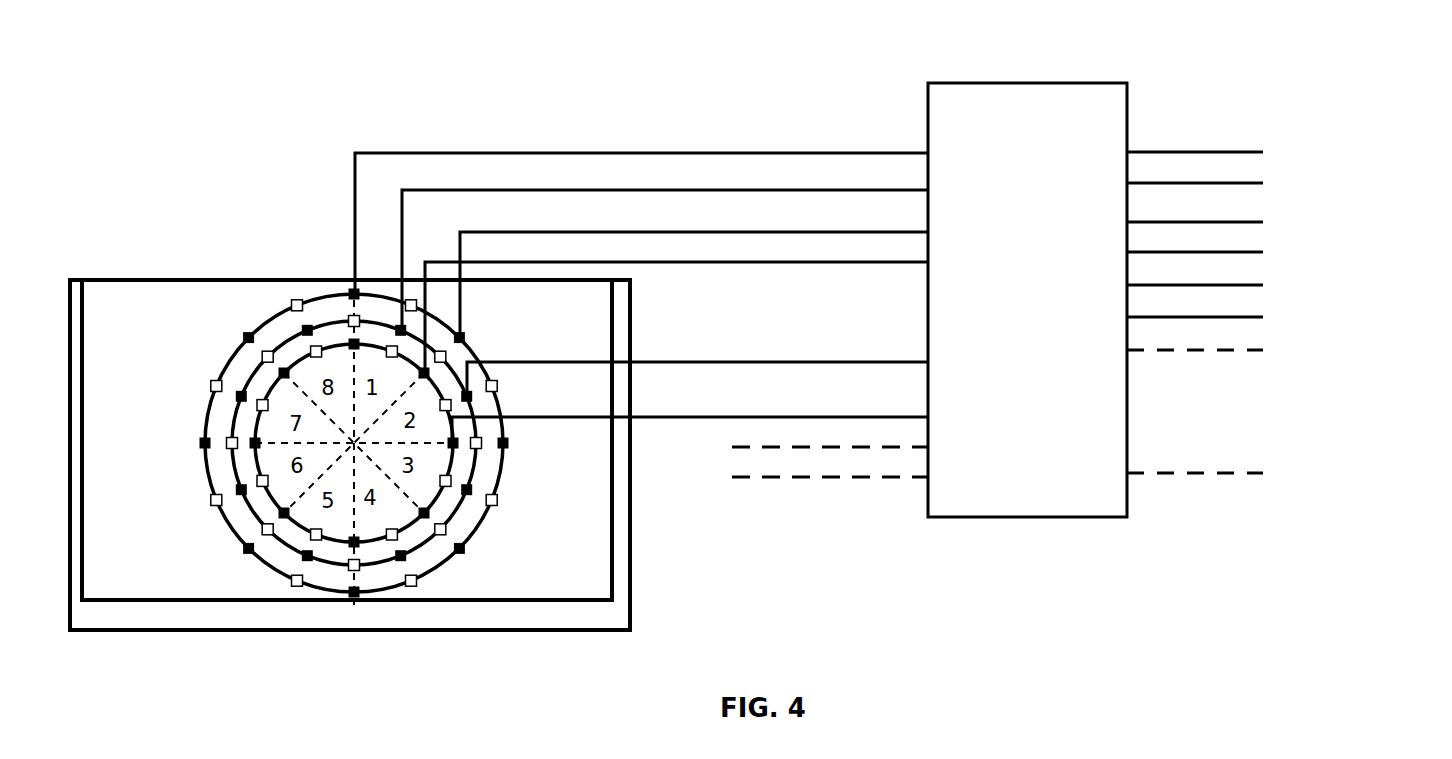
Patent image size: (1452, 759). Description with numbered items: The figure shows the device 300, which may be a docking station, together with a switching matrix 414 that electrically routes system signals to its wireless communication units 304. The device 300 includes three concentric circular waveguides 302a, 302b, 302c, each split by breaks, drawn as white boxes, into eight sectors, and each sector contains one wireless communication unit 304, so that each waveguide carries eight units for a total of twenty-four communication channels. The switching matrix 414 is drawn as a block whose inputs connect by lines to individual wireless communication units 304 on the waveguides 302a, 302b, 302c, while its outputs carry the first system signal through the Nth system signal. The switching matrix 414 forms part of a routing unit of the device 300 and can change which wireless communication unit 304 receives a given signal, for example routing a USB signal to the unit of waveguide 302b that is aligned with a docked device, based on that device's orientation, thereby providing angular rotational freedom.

The device 300 is at (162, 236).
The circular waveguide 302a is at (287, 530).
The circular waveguide 302b is at (246, 374).
The circular waveguide 302c is at (263, 323).
The wireless communication unit 304 is at (466, 337).
The switching matrix 414 is at (1043, 83).